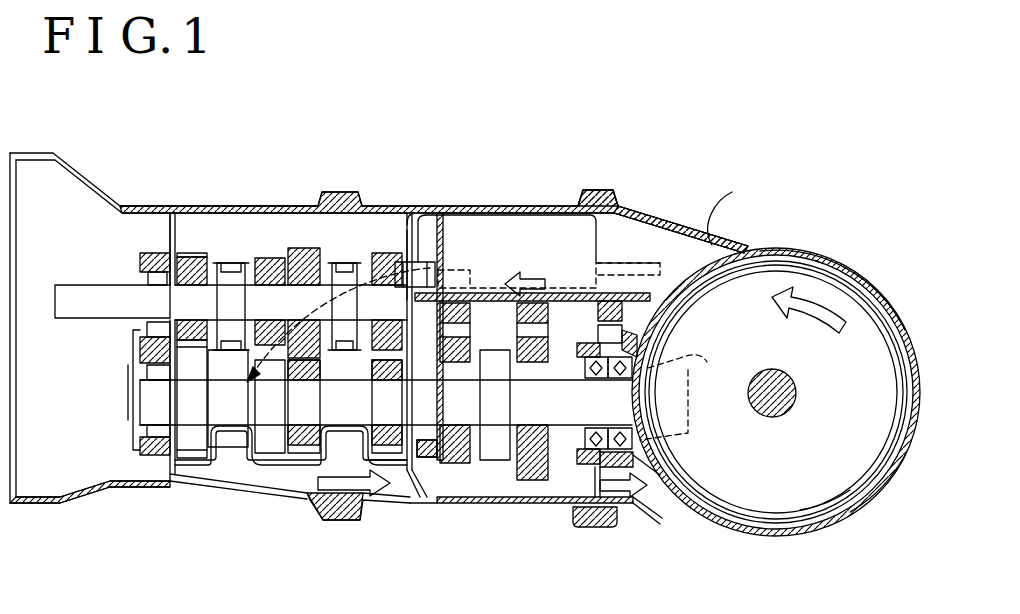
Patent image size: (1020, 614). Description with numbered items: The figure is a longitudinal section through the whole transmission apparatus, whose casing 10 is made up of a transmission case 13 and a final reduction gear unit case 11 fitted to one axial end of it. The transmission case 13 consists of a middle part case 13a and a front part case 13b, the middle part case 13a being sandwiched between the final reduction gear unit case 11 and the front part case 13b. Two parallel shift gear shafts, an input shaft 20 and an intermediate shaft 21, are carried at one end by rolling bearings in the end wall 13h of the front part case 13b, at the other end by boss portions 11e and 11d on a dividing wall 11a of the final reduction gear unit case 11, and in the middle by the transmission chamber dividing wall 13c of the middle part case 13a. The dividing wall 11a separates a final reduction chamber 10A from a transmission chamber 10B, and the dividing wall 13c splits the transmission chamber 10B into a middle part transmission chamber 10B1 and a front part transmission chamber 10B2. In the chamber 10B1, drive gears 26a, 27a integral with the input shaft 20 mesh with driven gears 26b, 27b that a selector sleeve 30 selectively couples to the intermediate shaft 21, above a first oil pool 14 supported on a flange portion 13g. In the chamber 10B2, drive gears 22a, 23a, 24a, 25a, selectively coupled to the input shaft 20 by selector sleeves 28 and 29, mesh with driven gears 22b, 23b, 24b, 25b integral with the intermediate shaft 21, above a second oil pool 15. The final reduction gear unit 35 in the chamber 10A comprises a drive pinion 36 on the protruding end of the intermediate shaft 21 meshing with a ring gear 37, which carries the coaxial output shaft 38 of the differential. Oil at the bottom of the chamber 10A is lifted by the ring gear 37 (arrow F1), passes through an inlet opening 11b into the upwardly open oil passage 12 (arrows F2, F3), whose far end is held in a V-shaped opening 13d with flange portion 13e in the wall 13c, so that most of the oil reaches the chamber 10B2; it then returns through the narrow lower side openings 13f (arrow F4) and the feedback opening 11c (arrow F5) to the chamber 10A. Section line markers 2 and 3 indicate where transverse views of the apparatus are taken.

The casing 10 is at (380, 203).
The final reduction chamber 10A is at (867, 297).
The transmission chamber 10B is at (615, 195).
The middle part transmission chamber 10B1 is at (687, 227).
The front part transmission chamber 10B2 is at (258, 220).
The final reduction gear unit case 11 is at (847, 260).
The dividing wall 11a is at (662, 462).
The inlet opening 11b is at (736, 211).
The feedback opening 11c is at (663, 492).
The boss portion 11d is at (620, 513).
The boss portion 11e is at (617, 260).
The oil passage 12 is at (525, 215).
The transmission case 13 is at (215, 200).
The middle part case 13a is at (485, 208).
The front part case 13b is at (265, 208).
The transmission chamber dividing wall 13c is at (440, 213).
The opening 13d is at (433, 233).
The flange portion 13e is at (427, 307).
The lower side openings 13f is at (400, 470).
The flange portion 13g is at (428, 480).
The end wall 13h is at (168, 233).
The first oil pool 14 is at (585, 457).
The second oil pool 15 is at (227, 413).
The input shaft 20 is at (182, 302).
The intermediate shaft 21 is at (190, 440).
The drive gear 22a is at (193, 255).
The driven gear 22b is at (190, 470).
The drive gear 23a is at (275, 255).
The driven gear 23b is at (265, 445).
The drive gear 24a is at (307, 258).
The driven gear 24b is at (305, 440).
The drive gear 25a is at (387, 255).
The driven gear 25b is at (380, 445).
The drive gear 26a is at (465, 258).
The driven gear 26b is at (470, 465).
The drive gear 27a is at (537, 268).
The driven gear 27b is at (540, 480).
The selector sleeve 28 is at (228, 262).
The selector sleeve 29 is at (345, 262).
The selector sleeve 30 is at (500, 460).
The final reduction gear unit 35 is at (878, 487).
The drive pinion 36 is at (693, 366).
The ring gear 37 is at (825, 493).
The output shaft 38 is at (797, 385).
The arrow F1 is at (807, 320).
The arrow F2 is at (619, 304).
The arrow F3 is at (293, 305).
The arrow F4 is at (330, 490).
The arrow F5 is at (645, 517).
The section line of FIG. 2 is at (598, 168).
The section line of FIG. 3 is at (435, 170).